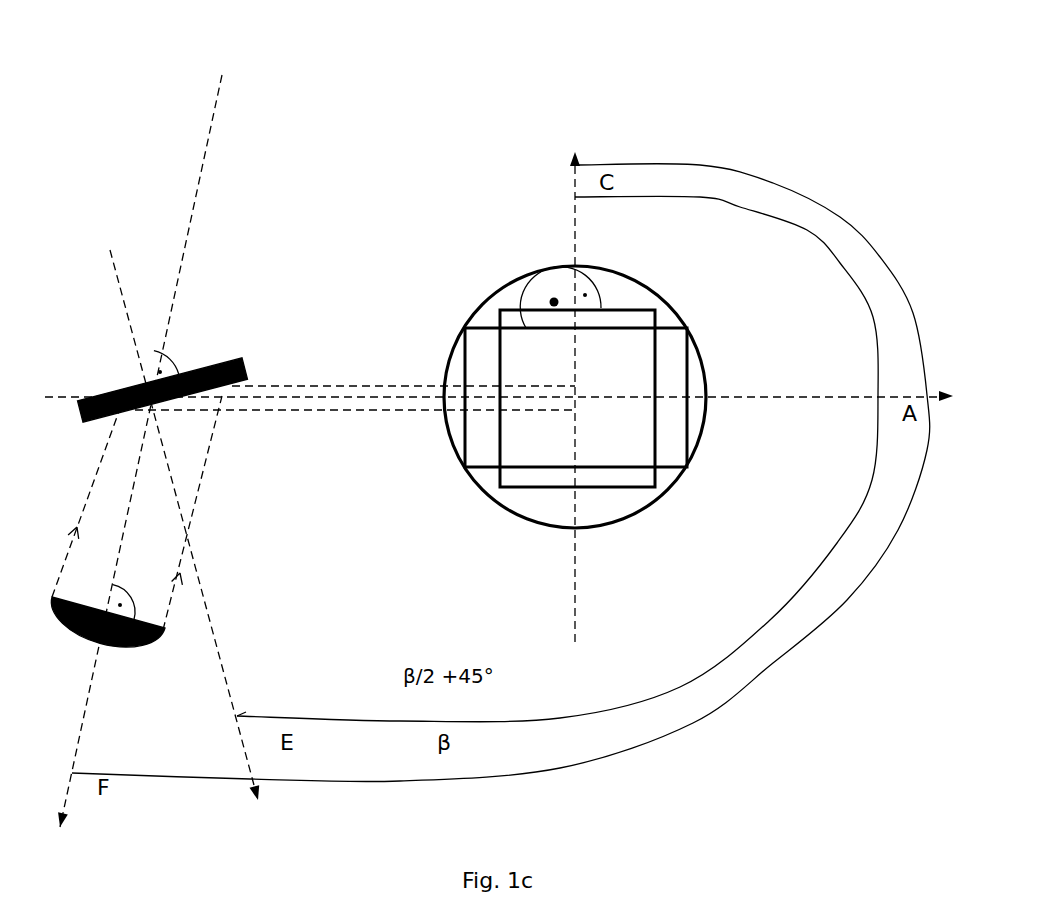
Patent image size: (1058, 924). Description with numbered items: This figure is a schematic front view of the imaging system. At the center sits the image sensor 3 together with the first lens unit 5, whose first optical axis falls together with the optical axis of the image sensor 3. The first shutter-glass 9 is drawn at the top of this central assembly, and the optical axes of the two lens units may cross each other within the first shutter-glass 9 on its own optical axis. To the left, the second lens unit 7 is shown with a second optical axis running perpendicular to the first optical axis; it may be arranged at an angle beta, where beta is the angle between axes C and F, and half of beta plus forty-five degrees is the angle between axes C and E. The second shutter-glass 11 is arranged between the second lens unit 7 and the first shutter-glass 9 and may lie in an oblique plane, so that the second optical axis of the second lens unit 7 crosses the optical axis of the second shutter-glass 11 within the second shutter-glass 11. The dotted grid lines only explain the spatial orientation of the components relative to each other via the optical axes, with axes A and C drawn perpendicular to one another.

The image sensor 3 is at (705, 372).
The first lens unit 5 is at (698, 303).
The second lens unit 7 is at (150, 658).
The first shutter-glass 9 is at (640, 297).
The second shutter-glass 11 is at (232, 352).